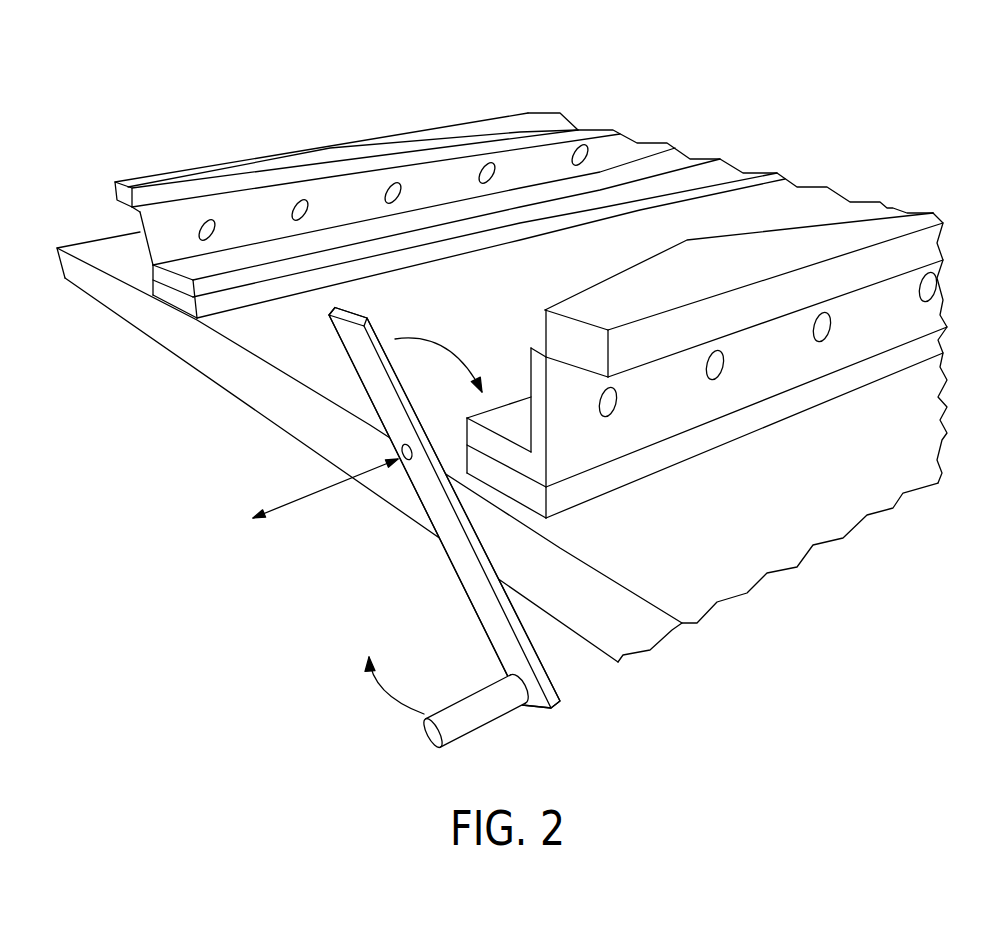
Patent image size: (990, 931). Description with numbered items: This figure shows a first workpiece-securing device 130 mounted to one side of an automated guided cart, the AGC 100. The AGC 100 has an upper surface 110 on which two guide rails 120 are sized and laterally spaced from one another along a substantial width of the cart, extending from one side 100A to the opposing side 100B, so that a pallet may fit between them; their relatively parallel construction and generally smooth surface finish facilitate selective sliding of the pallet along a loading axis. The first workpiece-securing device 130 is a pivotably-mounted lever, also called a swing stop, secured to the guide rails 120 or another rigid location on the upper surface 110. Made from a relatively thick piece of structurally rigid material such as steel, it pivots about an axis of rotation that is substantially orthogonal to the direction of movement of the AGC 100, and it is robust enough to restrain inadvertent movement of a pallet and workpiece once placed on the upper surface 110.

The AGC 100 is at (493, 397).
The side 100A is at (133, 310).
The opposing side 100B is at (876, 83).
The upper surface 110 is at (503, 298).
The guide rails 120 is at (370, 188).
The first workpiece-securing device 130 is at (347, 347).